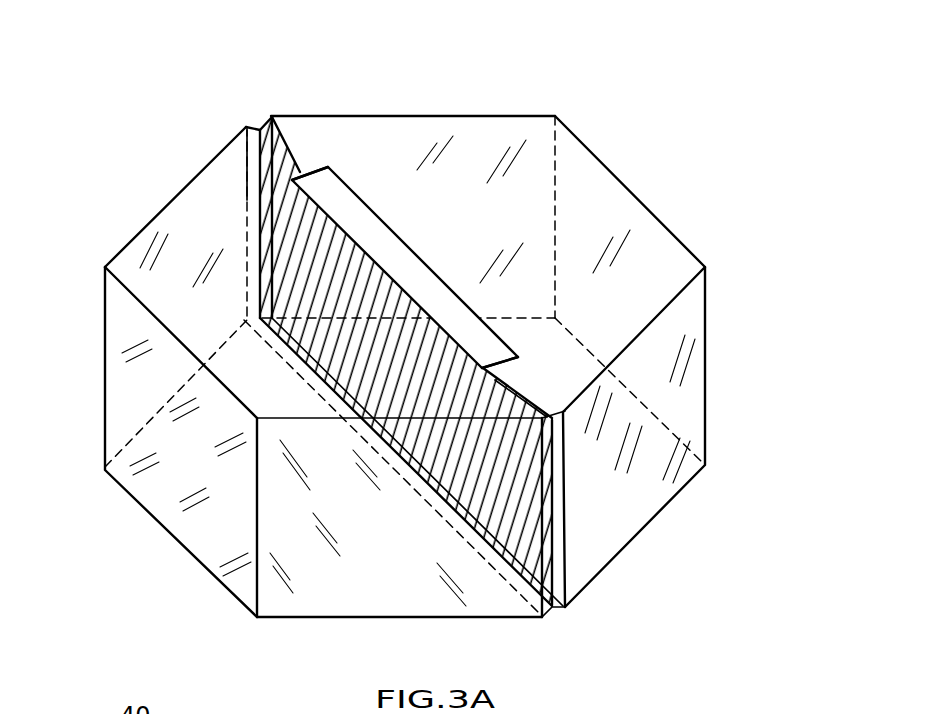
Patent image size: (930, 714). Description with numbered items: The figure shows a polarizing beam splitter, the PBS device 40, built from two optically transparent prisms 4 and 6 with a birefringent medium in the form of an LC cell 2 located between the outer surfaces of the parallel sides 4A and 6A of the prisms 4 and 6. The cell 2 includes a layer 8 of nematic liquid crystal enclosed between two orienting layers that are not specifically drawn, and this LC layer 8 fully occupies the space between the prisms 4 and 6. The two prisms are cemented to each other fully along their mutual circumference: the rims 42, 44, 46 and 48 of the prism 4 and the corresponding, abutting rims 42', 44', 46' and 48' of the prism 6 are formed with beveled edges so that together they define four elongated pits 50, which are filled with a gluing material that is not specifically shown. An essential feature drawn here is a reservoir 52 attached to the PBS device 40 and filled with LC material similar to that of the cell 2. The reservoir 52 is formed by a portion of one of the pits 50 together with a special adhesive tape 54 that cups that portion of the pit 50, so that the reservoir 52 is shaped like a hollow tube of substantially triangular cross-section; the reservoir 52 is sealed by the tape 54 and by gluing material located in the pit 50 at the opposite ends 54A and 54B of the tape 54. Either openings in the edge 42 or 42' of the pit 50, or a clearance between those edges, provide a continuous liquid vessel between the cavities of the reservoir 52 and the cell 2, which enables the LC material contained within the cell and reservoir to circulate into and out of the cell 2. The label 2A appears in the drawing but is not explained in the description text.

The PBS device 40 is at (404, 348).
The LC cell 2 is at (295, 399).
The face of first prism 2A is at (517, 327).
The prism 4 is at (510, 361).
The parallel side of prism 4A is at (553, 452).
The prism 6 is at (207, 513).
The parallel side of prism 6A is at (247, 232).
The layer of NLC 8 is at (443, 510).
The rim 42 is at (315, 173).
The rim 42' is at (289, 161).
The rim 44 is at (248, 70).
The rim 44' is at (186, 145).
The rim 46 is at (434, 348).
The rim 46' is at (391, 498).
The rim 48 is at (648, 512).
The rim 48' is at (563, 649).
The pits 50 is at (552, 473).
The reservoir 52 is at (388, 203).
The adhesive tape 54 is at (526, 205).
The end of tape 54A is at (518, 360).
The end of tape 54B is at (330, 166).